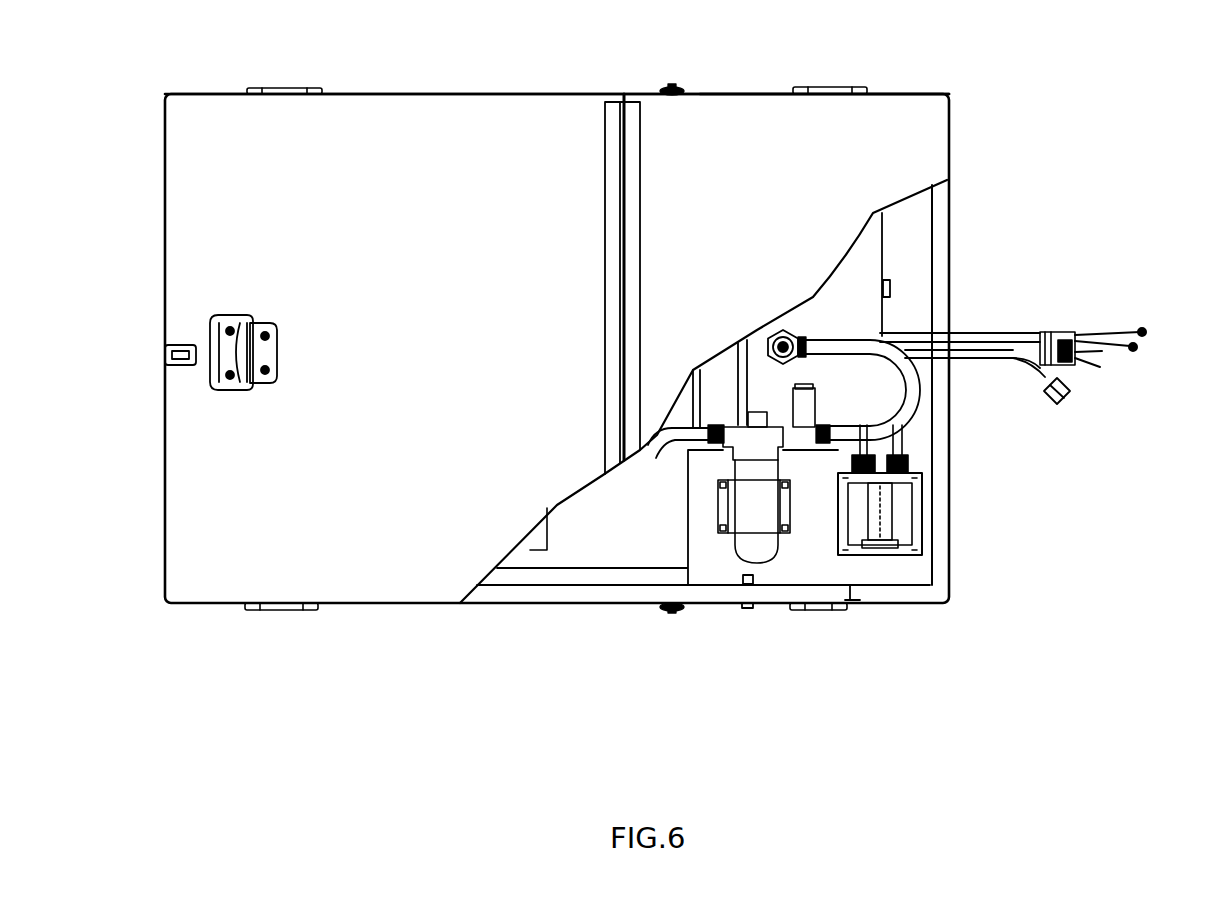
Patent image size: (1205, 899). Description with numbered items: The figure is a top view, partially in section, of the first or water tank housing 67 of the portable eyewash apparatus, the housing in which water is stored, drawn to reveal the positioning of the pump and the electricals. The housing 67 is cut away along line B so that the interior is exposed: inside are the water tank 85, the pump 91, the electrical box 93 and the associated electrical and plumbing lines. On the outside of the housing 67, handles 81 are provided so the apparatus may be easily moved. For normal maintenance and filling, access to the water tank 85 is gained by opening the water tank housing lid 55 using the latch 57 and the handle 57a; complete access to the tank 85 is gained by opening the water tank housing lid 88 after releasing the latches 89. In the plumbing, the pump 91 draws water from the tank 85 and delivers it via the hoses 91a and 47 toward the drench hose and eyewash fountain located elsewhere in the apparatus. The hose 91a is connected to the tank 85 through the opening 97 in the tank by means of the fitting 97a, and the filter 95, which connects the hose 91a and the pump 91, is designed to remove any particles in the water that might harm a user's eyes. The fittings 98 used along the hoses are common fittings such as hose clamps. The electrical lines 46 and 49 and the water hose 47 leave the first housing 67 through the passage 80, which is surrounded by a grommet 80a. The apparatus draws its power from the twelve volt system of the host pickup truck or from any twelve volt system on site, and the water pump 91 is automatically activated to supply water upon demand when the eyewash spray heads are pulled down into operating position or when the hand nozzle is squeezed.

The water tank housing lid 55 is at (172, 167).
The water tank housing 67 is at (515, 94).
The water tank housing lid 88 is at (745, 110).
The handles 81 is at (300, 88).
The latches 89 is at (670, 86).
The latch 57 is at (163, 350).
The handle 57a is at (210, 348).
The cut-away line B is at (898, 200).
The water tank 85 is at (880, 252).
The pump 91 is at (733, 560).
The hose 91a is at (835, 345).
The filter 95 is at (793, 410).
The opening 97 is at (770, 338).
The fitting 97a is at (782, 338).
The fittings 98 is at (799, 337).
The water hose 47 is at (672, 445).
The passage 80 is at (955, 358).
The grommet 80a is at (950, 333).
The electrical line 49 is at (1085, 333).
The electrical line 46 is at (1075, 362).
The electrical box 93 is at (922, 517).